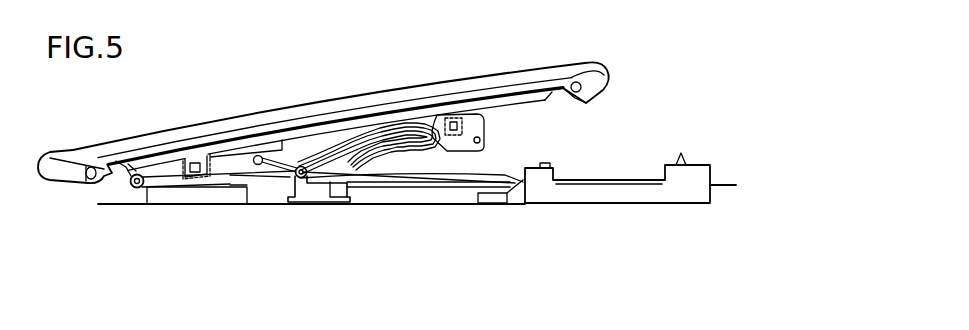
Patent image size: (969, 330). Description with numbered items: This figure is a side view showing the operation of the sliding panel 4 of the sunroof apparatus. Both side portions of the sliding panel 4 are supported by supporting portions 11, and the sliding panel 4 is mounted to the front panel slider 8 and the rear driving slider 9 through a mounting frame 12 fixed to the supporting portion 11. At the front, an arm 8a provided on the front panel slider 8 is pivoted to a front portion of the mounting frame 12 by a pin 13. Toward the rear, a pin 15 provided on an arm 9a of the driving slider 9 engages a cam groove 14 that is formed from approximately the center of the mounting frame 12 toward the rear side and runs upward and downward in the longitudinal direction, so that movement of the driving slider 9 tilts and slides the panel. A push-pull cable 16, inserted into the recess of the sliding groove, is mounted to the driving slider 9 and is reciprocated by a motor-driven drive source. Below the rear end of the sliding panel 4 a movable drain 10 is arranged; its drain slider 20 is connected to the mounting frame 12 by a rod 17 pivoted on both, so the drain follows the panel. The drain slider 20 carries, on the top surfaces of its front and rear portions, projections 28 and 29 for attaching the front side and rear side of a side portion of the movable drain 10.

The sliding panel 4 is at (317, 107).
The front panel slider 8 is at (190, 197).
The arm 8a is at (140, 188).
The driving slider 9 is at (322, 190).
The arm 9a is at (298, 178).
The movable drain 10 is at (618, 180).
The supporting portion 11 is at (442, 103).
The mounting frame 12 is at (440, 138).
The pin 13 is at (140, 165).
The cam groove 14 is at (363, 150).
The pin 15 is at (287, 177).
The push-pull cable 16 is at (445, 188).
The rod 17 is at (410, 185).
The drain slider 20 is at (600, 198).
The projection 28 is at (545, 164).
The projection 29 is at (682, 160).